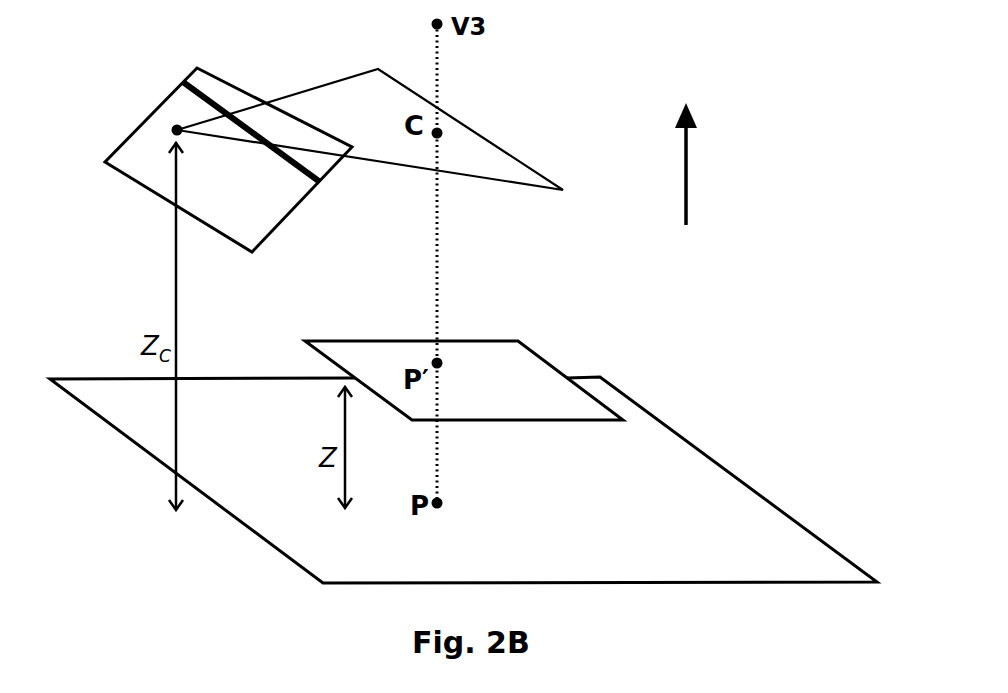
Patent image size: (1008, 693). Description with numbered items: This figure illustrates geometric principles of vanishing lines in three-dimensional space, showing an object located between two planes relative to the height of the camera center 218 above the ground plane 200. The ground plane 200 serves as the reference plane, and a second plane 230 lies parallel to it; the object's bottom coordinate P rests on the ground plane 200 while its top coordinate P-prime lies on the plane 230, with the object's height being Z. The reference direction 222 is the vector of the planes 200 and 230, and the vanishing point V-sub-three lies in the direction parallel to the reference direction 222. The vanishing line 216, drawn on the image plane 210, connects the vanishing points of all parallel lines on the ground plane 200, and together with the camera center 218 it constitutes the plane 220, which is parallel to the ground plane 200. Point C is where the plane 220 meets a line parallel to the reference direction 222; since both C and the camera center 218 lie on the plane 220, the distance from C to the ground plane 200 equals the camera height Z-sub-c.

The ground plane 200 is at (758, 557).
The image plane 210 is at (244, 241).
The vanishing line 216 is at (208, 87).
The camera center 218 is at (163, 124).
The plane 220 is at (537, 173).
The reference direction 222 is at (716, 164).
The plane 230 is at (517, 407).